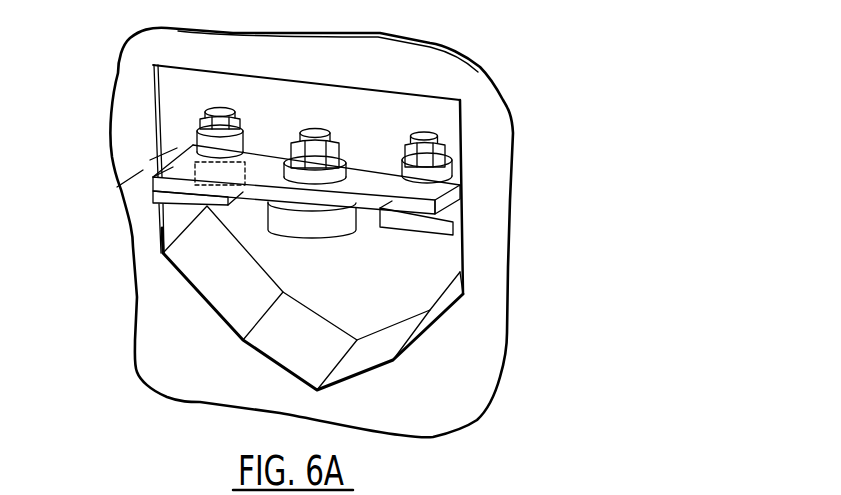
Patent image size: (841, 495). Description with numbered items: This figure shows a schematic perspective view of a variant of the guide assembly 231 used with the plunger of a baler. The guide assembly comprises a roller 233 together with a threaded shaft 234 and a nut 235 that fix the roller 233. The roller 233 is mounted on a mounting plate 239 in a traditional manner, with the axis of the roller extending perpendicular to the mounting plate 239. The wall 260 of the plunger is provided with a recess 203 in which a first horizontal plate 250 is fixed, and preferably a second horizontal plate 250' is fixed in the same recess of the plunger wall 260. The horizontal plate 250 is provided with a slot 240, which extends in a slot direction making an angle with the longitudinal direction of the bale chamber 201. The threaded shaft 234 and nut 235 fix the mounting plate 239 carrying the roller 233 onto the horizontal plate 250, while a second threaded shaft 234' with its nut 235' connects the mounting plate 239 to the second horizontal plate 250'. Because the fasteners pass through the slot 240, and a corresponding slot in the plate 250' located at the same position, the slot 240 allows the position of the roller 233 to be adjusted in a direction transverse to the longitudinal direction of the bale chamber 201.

The bale chamber 201 is at (512, 429).
The opening in housing wall 203 is at (472, 348).
The slot 240 is at (107, 185).
The wall of the plunger 260 is at (157, 370).
The mounting plate 239 is at (270, 147).
The first horizontal plate 250 is at (135, 218).
The second horizontal plate 250' is at (486, 202).
The roller 233 is at (303, 227).
The fastening assembly 231 is at (335, 100).
The threaded shaft 234 is at (221, 80).
The nut 235 is at (144, 110).
The second threaded shaft 234' is at (499, 110).
The nut 235' is at (494, 154).